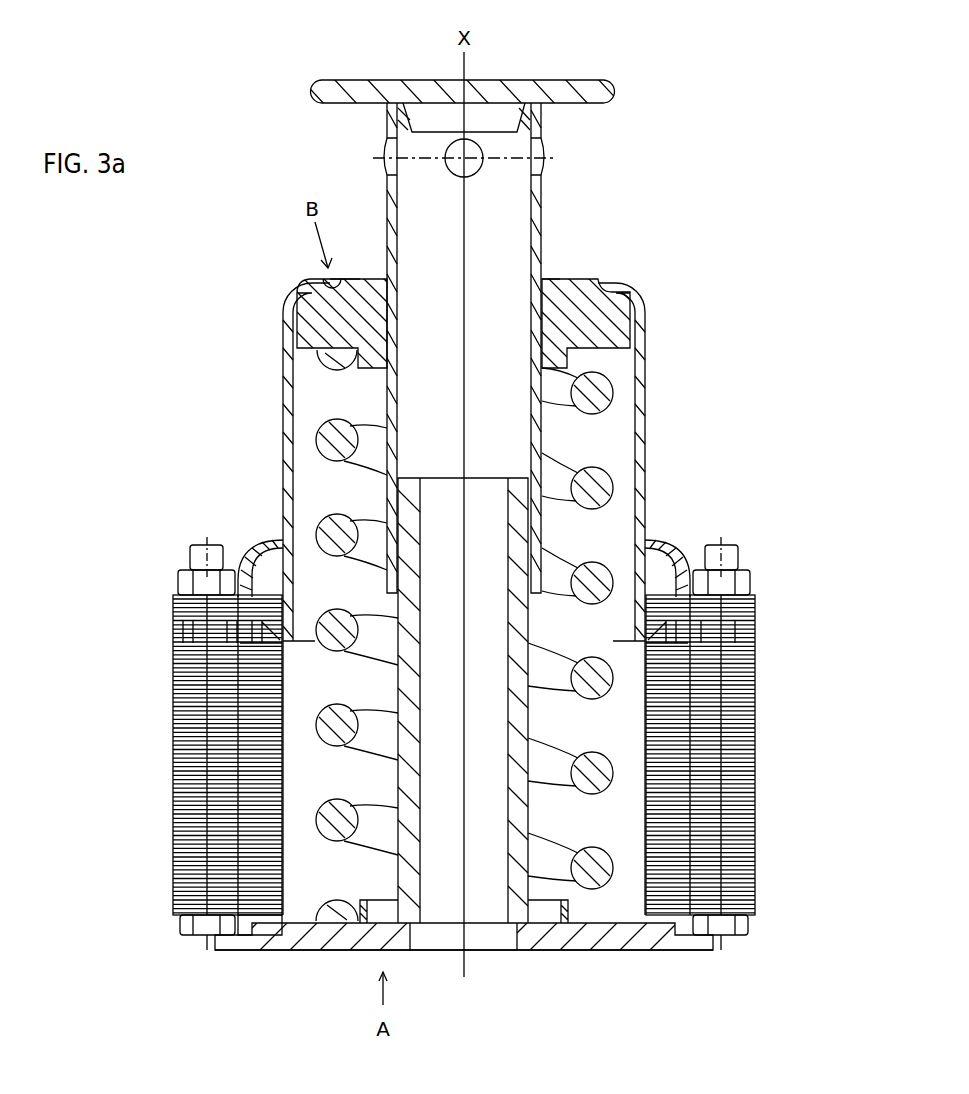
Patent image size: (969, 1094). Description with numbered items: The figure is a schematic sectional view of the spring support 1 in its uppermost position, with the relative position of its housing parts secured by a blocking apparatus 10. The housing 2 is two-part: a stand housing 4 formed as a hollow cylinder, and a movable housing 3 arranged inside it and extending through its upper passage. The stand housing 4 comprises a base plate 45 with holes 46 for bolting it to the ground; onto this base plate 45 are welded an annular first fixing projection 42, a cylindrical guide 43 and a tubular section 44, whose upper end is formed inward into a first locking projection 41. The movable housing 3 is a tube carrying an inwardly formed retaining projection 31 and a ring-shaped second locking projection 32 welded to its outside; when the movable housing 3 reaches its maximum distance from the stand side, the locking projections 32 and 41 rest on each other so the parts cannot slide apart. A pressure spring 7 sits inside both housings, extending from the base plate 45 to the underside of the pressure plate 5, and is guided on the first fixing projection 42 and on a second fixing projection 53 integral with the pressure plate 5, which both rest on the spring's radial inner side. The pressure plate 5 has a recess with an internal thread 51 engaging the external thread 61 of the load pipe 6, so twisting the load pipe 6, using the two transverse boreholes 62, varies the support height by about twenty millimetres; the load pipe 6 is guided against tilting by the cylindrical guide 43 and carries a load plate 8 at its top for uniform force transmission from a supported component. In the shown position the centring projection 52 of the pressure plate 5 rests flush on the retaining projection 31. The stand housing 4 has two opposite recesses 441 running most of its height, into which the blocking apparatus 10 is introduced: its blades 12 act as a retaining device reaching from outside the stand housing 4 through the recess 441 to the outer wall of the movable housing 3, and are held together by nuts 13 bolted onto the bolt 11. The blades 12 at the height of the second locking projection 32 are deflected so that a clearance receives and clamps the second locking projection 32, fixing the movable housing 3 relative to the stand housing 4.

The spring support 1 is at (718, 100).
The housing 2 is at (660, 452).
The movable housing 3 is at (642, 370).
The retaining projection 31 is at (630, 292).
The second locking projection 32 is at (180, 622).
The stand housing 4 is at (257, 545).
The first locking projection 41 is at (678, 545).
The first fixing projection 42 is at (568, 930).
The cylindrical guide 43 is at (517, 905).
The tubular section 44 is at (722, 552).
The recesses 441 is at (757, 644).
The base plate 45 is at (362, 915).
The holes 46 is at (237, 935).
The pressure plate 5 is at (330, 290).
The internal thread 51 is at (548, 305).
The centring projection 52 is at (343, 290).
The second fixing projection 53 is at (325, 370).
The load pipe 6 is at (540, 212).
The external thread 61 is at (545, 278).
The boreholes 62 is at (472, 152).
The pressure spring 7 is at (283, 815).
The load plate 8 is at (330, 92).
The blocking apparatus 10 is at (162, 552).
The bolt 11 is at (198, 553).
The blades 12 is at (176, 712).
The nuts 13 is at (180, 583).